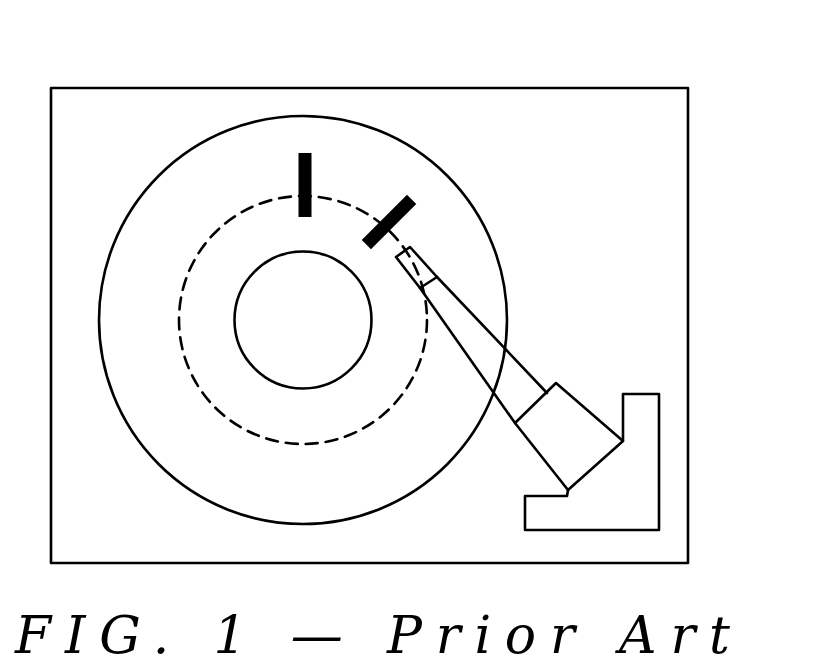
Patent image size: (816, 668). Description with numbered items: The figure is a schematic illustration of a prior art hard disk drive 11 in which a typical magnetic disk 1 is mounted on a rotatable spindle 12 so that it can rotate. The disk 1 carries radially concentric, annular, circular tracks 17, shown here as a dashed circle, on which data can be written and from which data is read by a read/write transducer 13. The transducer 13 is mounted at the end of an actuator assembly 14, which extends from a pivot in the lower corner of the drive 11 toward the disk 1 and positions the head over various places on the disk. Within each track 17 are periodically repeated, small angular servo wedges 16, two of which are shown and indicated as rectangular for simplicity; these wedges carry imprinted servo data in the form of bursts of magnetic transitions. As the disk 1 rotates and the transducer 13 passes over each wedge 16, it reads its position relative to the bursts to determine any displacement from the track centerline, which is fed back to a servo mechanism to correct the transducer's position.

The magnetic disk 1 is at (353, 152).
The hard disk drive 11 is at (670, 156).
The rotatable spindle 12 is at (341, 342).
The read/write transducer 13 is at (418, 262).
The actuator assembly 14 is at (523, 377).
The servo wedges 16 is at (298, 170).
The tracks 17 is at (286, 446).